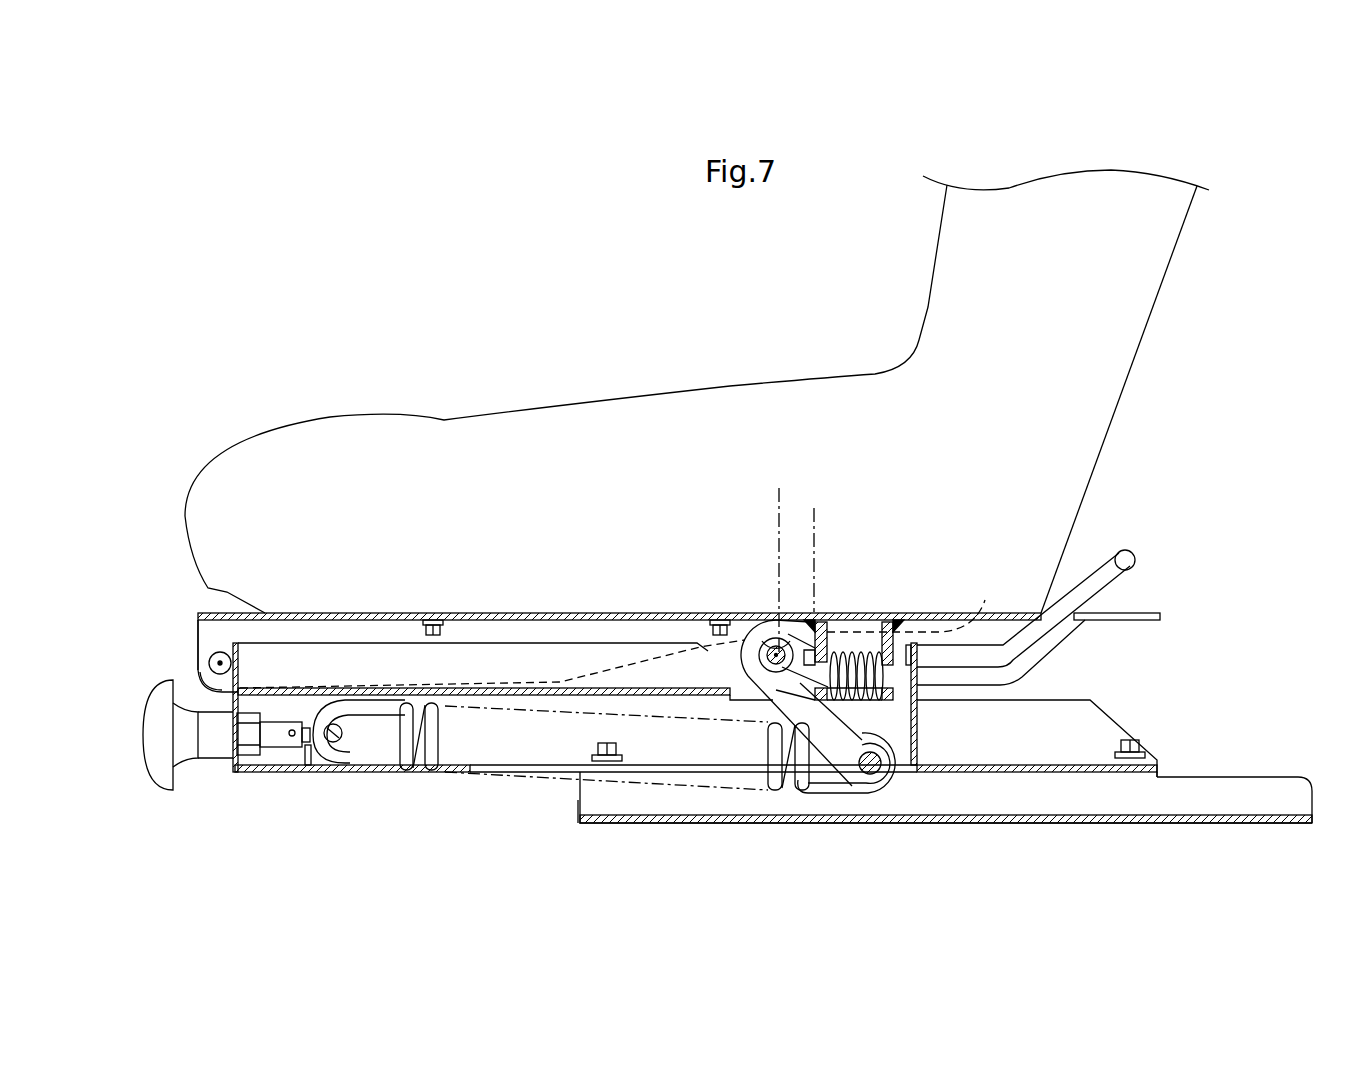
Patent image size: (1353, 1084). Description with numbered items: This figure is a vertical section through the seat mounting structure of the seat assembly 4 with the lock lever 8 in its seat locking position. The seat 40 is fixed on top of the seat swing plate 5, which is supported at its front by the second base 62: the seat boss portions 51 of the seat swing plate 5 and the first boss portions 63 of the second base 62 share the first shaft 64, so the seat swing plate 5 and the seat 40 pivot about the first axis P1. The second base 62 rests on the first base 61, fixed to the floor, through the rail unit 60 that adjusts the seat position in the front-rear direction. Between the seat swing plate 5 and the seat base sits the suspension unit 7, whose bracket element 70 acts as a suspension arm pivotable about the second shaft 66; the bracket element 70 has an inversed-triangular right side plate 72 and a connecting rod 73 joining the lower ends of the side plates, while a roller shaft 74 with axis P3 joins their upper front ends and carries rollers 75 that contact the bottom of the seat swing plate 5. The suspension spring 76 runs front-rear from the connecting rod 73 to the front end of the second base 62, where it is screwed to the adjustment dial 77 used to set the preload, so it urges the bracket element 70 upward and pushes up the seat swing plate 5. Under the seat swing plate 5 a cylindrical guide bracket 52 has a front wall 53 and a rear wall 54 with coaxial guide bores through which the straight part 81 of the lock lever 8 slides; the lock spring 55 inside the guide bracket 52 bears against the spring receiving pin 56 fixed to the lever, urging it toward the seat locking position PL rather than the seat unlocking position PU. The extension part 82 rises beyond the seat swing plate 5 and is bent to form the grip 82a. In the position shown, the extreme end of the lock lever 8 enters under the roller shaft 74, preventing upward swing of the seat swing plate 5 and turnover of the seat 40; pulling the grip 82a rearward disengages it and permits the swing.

The seat 40 is at (625, 394).
The seat assembly 4 is at (1126, 502).
The seat swing plate 5 is at (510, 612).
The second base 62 is at (555, 663).
The first shaft 64 is at (224, 652).
The seat boss portions 51 is at (213, 632).
The first boss portions 63 is at (205, 642).
The first axis P1 is at (208, 658).
The adjustment dial 77 is at (158, 740).
The suspension spring 76 is at (435, 765).
The rail unit 60 is at (1045, 798).
The first base 61 is at (1252, 790).
The suspension unit 7 is at (766, 618).
The roller 75 is at (745, 618).
The roller shaft 74 is at (776, 656).
The axis of roller shaft P3 is at (776, 655).
The seat locking position PL is at (778, 556).
The seat unlocking position PU is at (818, 547).
The bracket element 70 is at (771, 716).
The right side plate 72 is at (847, 738).
The connecting rod 73 is at (869, 776).
The front wall 53 is at (813, 640).
The rear wall 54 is at (888, 615).
The spring receiving pin 56 is at (823, 650).
The lock spring 55 is at (848, 650).
The guide bracket 52 is at (900, 628).
The second shaft 66 is at (983, 612).
The lock lever 8 is at (1084, 579).
The extension part 82 is at (1060, 637).
The straight part 81 is at (975, 680).
The grip 82a is at (1133, 556).